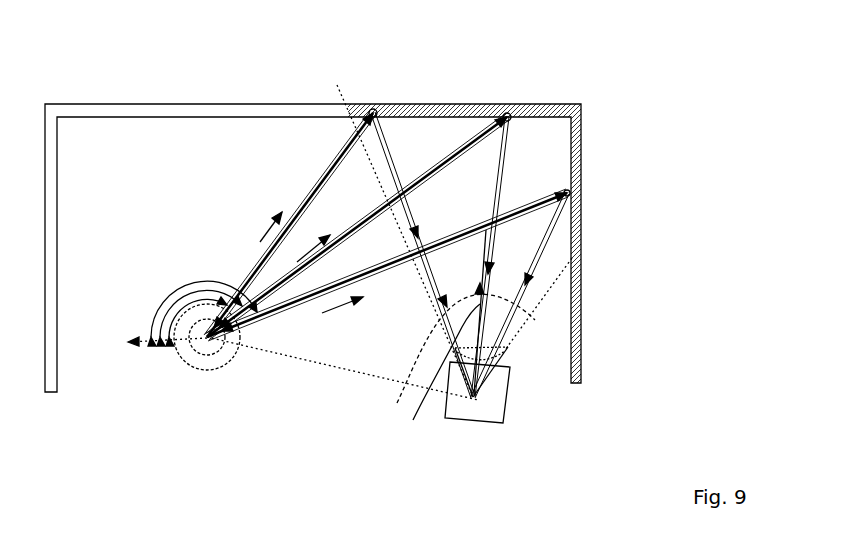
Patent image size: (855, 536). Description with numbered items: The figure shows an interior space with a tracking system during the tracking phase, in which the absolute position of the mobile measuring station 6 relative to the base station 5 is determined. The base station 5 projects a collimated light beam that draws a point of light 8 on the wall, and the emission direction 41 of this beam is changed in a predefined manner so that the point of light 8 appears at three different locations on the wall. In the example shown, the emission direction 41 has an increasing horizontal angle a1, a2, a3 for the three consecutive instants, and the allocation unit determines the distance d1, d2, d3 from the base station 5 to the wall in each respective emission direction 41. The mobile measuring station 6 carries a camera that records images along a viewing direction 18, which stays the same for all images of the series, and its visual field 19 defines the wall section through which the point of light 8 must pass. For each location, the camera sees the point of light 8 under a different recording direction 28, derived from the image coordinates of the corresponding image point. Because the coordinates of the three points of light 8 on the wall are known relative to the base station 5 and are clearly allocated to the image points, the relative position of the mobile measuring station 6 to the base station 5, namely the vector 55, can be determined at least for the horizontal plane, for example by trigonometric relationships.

The emission direction 41 is at (270, 237).
The distance d1 is at (300, 208).
The distance d2 is at (417, 178).
The distance d3 is at (513, 215).
The point of light 8 is at (373, 112).
The recording direction 28 is at (420, 220).
The horizontal angle a1 is at (175, 298).
The horizontal angle a2 is at (188, 292).
The horizontal angle a3 is at (207, 288).
The base station 5 is at (222, 392).
The vector 55 is at (330, 365).
The visual field 19 is at (450, 352).
The viewing direction 18 is at (422, 370).
The mobile measuring station 6 is at (525, 390).